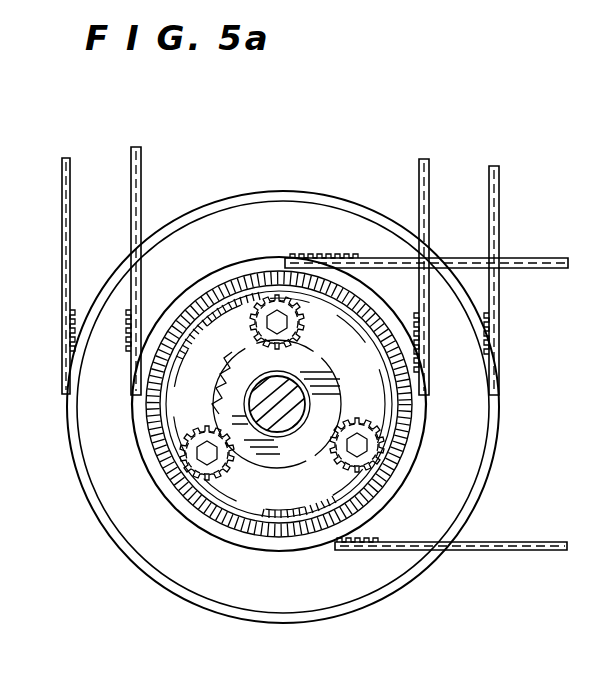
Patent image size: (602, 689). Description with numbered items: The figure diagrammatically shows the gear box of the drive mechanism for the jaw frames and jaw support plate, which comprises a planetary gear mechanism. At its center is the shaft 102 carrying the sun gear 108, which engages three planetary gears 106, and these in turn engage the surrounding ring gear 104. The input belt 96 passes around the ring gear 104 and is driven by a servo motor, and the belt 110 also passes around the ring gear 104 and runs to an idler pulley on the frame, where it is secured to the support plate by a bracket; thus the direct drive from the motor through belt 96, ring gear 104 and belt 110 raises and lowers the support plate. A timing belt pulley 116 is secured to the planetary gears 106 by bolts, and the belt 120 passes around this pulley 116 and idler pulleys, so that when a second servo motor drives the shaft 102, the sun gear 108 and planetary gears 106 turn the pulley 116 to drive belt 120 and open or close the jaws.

The input belt 96 is at (522, 549).
The shaft 102 is at (278, 432).
The ring gear 104 is at (430, 418).
The planetary gears 106 is at (256, 318).
The sun gear 108 is at (336, 533).
The belt 110 is at (425, 172).
The timing belt pulley 116 is at (492, 466).
The belt 120 is at (500, 172).